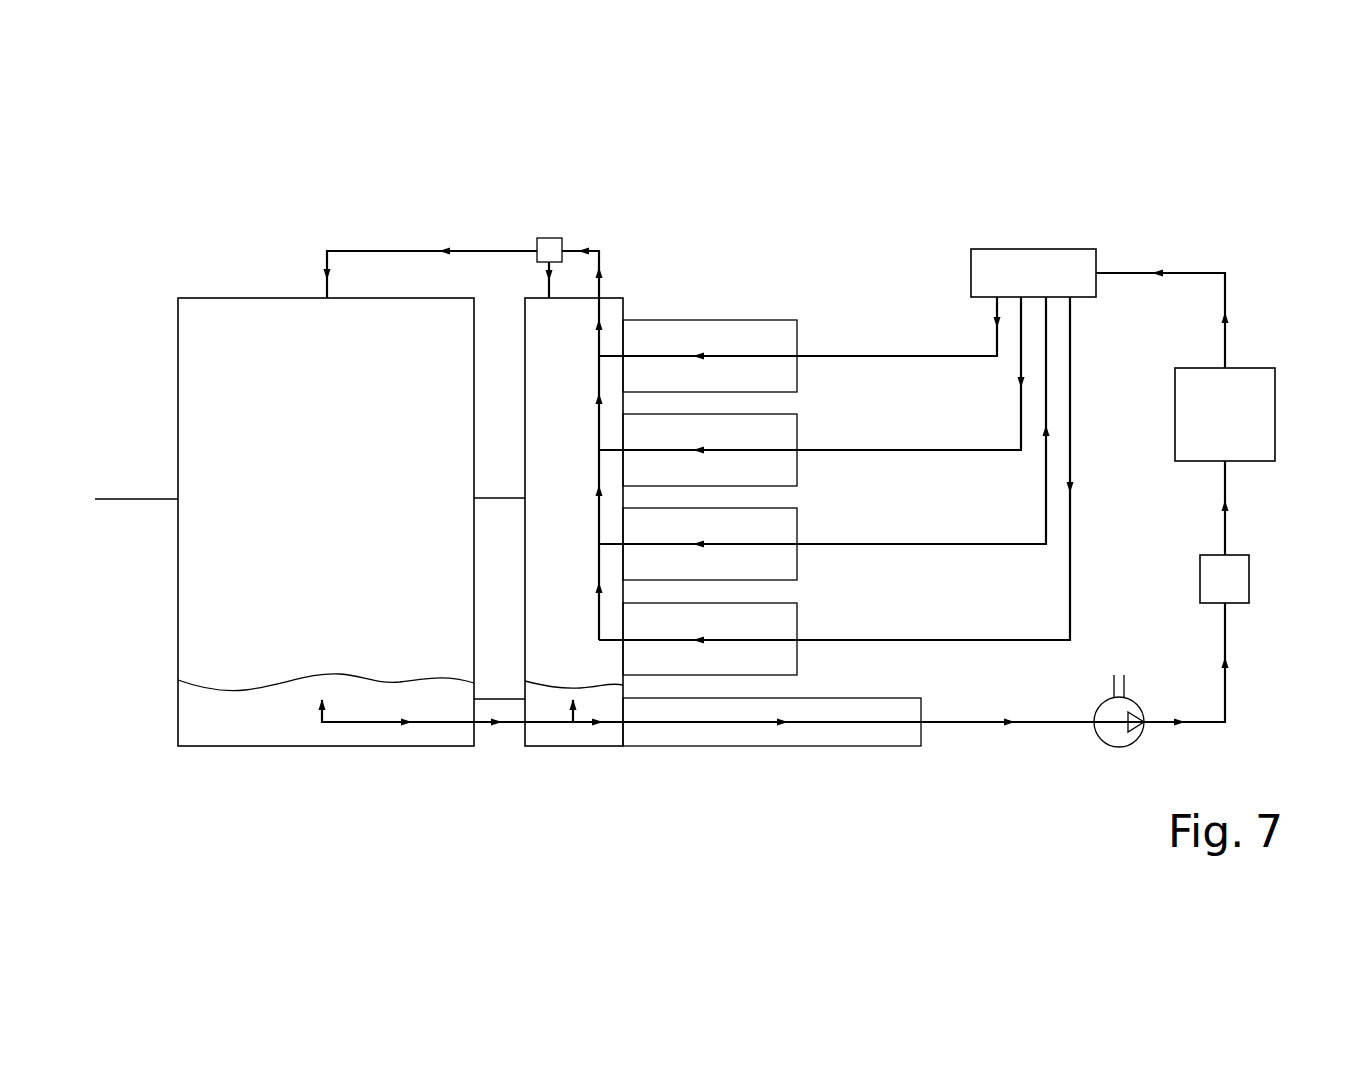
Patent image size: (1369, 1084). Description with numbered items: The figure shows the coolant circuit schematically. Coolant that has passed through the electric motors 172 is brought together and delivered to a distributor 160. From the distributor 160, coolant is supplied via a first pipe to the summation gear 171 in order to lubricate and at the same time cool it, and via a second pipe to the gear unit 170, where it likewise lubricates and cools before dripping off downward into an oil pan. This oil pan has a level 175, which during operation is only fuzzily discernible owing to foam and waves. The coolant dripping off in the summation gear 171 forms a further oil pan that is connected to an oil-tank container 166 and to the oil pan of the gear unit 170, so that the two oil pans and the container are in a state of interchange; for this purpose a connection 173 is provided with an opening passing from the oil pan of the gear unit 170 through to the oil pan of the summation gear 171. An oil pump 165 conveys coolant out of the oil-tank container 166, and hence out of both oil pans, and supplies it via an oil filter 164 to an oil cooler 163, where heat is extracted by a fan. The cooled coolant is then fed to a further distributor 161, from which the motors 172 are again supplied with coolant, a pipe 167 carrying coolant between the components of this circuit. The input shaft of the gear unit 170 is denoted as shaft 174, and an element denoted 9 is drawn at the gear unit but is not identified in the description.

The inlet line 9 is at (135, 499).
The distributor 160 is at (553, 250).
The distributor 161 is at (1028, 280).
The oil cooler 163 is at (1228, 411).
The oil filter 164 is at (1228, 579).
The oil pump 165 is at (1119, 722).
The oil-tank container 166 is at (821, 732).
The pipe 167 is at (1070, 373).
The gear unit 170 is at (255, 356).
The summation gear 171 is at (608, 324).
The electric motor 172 is at (761, 341).
The connection 173 is at (500, 732).
The shaft 174 is at (502, 498).
The level 175 is at (239, 691).